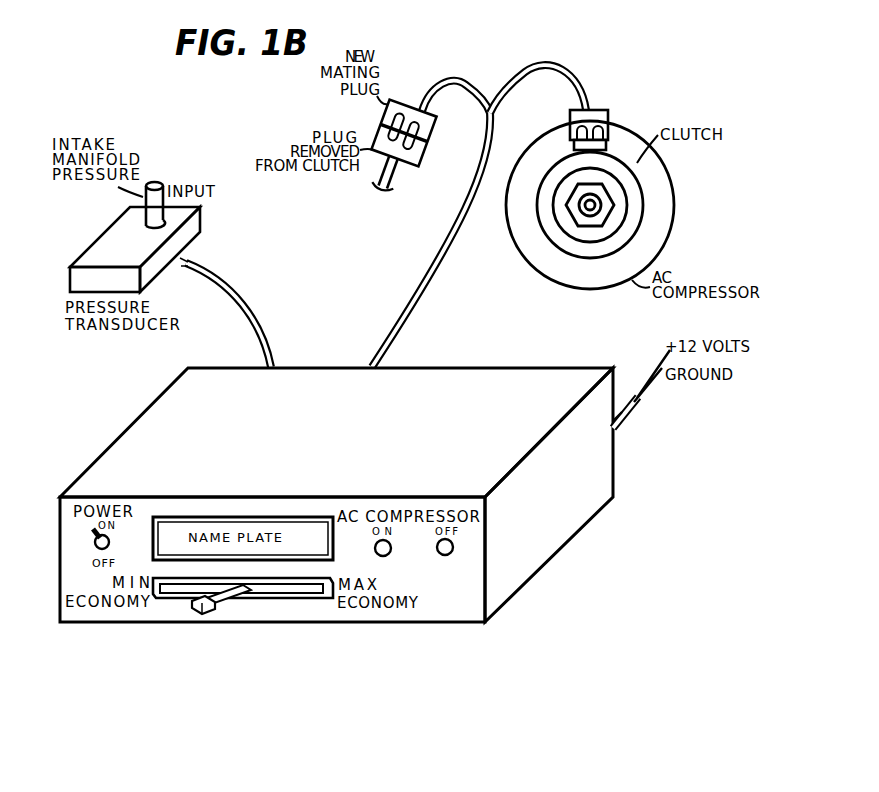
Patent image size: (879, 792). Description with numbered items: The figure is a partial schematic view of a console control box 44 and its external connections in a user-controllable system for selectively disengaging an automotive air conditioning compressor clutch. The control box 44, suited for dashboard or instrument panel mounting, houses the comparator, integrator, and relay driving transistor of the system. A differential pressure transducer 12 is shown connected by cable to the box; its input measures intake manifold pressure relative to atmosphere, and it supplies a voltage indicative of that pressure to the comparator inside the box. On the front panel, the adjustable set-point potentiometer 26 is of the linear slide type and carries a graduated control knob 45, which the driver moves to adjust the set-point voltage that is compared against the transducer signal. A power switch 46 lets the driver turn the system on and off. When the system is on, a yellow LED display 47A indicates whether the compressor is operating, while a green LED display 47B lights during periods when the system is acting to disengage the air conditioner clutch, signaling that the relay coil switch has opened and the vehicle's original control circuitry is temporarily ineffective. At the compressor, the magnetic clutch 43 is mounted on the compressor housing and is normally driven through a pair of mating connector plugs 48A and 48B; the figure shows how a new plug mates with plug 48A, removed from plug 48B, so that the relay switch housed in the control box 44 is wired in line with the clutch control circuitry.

The differential pressure transducer 12 is at (203, 222).
The adjustable set-point potentiometer 26 is at (270, 598).
The compressor magnetic clutch 43 is at (643, 193).
The console control box 44 is at (122, 432).
The graduated control knob 45 is at (201, 614).
The power switch 46 is at (92, 533).
The yellow LED display 47A is at (386, 552).
The green LED display 47B is at (445, 555).
The mating connector plug 48A is at (429, 130).
The mating connector plug 48B is at (605, 112).